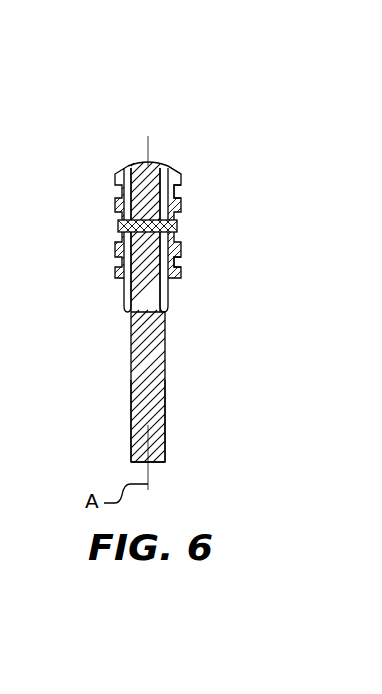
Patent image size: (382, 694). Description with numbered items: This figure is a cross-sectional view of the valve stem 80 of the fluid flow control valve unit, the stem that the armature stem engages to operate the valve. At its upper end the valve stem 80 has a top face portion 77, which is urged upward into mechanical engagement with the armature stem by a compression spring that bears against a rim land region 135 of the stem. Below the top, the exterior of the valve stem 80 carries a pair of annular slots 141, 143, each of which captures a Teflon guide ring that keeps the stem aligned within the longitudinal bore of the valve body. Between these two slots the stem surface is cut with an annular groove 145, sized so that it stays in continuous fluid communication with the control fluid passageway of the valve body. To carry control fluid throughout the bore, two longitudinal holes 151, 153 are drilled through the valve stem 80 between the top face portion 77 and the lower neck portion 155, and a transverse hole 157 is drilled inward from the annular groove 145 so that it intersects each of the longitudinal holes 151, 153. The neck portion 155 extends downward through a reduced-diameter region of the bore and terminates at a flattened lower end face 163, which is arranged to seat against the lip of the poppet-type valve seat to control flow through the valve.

The top face portion 77 is at (153, 164).
The valve stem 80 is at (165, 356).
The rim land region 135 is at (178, 280).
The annular slot 141 is at (174, 262).
The annular slot 143 is at (174, 192).
The annular groove 145 is at (117, 227).
The longitudinal hole 151 is at (127, 166).
The longitudinal hole 153 is at (170, 165).
The neck portion 155 is at (138, 414).
The transverse hole 157 is at (177, 226).
The lower end face 163 is at (156, 465).